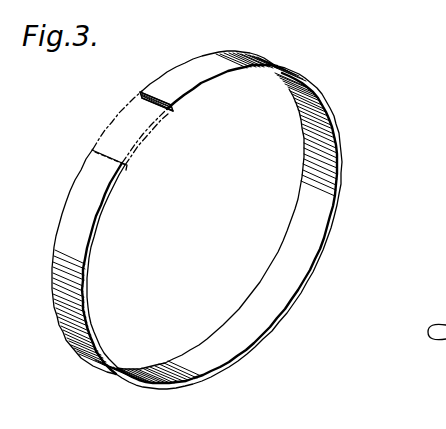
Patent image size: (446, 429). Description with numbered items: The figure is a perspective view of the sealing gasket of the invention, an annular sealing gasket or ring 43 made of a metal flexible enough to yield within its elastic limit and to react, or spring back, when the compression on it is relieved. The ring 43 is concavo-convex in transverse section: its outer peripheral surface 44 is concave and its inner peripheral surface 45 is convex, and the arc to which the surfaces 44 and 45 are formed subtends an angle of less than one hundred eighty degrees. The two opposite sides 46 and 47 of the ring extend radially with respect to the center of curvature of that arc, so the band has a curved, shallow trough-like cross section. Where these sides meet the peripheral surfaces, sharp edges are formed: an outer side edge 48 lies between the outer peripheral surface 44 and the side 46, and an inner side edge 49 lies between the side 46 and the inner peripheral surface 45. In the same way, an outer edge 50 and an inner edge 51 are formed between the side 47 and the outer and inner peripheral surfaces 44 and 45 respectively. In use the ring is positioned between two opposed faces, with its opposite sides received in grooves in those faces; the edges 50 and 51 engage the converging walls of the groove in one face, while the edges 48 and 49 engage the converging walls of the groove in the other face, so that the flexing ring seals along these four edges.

The annular sealing gasket or ring 43 is at (345, 121).
The outer peripheral surface 44 is at (199, 68).
The inner peripheral surface 45 is at (240, 325).
The side 46 is at (215, 88).
The side 47 is at (143, 90).
The outer side edge 48 is at (306, 84).
The inner side edge 49 is at (248, 78).
The outer edge 50 is at (160, 83).
The inner edge 51 is at (142, 95).